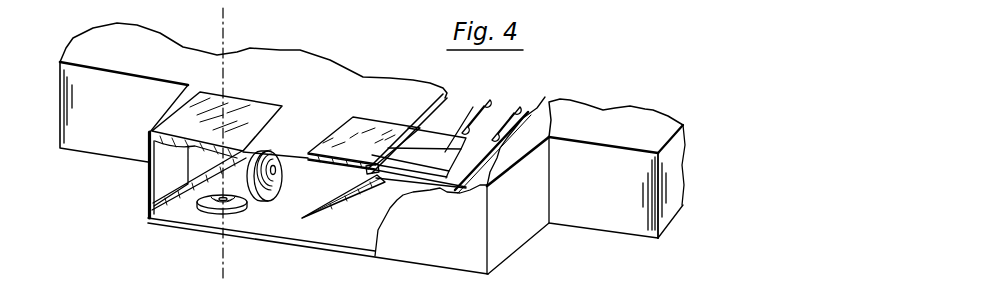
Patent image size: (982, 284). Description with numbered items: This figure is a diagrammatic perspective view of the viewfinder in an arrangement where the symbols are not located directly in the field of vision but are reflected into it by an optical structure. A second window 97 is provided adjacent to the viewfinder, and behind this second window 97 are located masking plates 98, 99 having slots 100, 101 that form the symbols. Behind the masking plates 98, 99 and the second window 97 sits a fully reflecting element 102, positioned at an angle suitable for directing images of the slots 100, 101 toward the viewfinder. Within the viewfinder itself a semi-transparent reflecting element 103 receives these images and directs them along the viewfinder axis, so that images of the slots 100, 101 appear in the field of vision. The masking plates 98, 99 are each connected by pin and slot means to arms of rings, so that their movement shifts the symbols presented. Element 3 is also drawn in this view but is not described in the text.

The cover plate 3 is at (183, 122).
The second window 97 is at (353, 129).
The masking plate 98 is at (472, 167).
The masking plate 99 is at (433, 127).
The slot 100 is at (418, 175).
The slot 101 is at (452, 163).
The fully reflecting element 102 is at (340, 207).
The semi-transparent reflecting element 103 is at (178, 197).